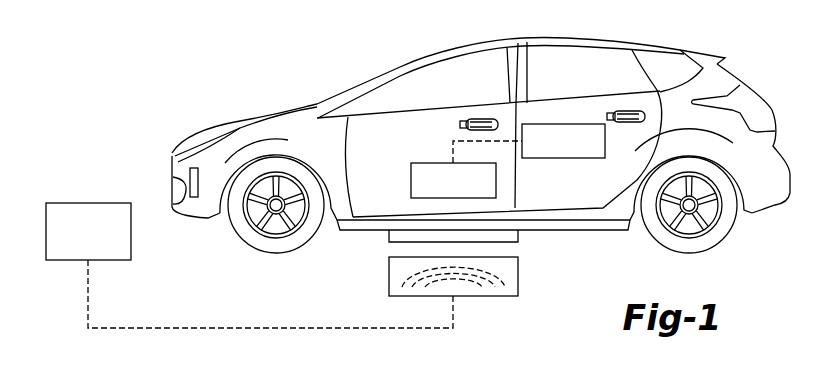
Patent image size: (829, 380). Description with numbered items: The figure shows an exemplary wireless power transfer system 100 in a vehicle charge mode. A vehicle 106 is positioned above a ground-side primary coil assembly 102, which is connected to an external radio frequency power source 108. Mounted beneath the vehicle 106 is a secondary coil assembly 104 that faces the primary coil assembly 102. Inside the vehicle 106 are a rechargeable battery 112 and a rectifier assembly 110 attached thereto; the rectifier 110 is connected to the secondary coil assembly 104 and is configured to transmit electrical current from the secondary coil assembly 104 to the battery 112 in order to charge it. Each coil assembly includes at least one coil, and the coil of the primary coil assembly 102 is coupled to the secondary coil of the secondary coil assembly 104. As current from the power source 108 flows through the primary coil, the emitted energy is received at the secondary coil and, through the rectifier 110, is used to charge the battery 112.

The wireless power transfer system 100 is at (122, 52).
The primary coil assembly 102 is at (480, 297).
The secondary coil assembly 104 is at (383, 236).
The vehicle 106 is at (367, 78).
The external radio frequency (RF) power source 108 is at (88, 203).
The rectifier assembly 110 is at (411, 181).
The rechargeable battery 112 is at (563, 124).